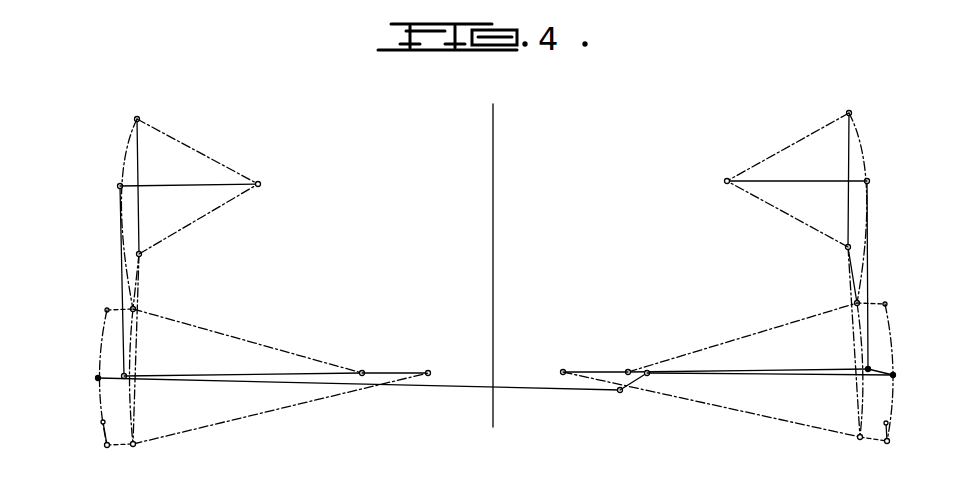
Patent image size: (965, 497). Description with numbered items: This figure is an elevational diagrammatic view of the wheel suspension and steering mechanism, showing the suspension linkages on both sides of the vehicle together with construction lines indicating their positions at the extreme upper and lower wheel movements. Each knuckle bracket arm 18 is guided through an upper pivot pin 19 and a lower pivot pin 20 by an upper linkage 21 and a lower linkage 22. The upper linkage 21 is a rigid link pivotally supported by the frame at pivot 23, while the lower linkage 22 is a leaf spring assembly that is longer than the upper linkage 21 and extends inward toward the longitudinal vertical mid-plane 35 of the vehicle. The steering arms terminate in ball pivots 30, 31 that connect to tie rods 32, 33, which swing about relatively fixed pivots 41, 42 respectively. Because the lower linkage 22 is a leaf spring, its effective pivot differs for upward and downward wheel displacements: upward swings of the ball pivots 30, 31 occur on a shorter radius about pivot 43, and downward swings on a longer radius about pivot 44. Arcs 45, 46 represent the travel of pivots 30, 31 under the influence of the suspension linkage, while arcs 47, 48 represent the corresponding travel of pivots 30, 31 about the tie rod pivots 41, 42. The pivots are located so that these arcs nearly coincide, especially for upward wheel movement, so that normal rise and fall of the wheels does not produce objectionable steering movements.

The knuckle bracket arm 18 is at (120, 257).
The upper pivot pin 19 is at (118, 186).
The lower pivot pin 20 is at (126, 376).
The upper linkage 21 is at (160, 186).
The lower linkage 22 is at (258, 378).
The frame pivot of upper linkage 23 is at (260, 184).
The ball pivot 30 is at (895, 376).
The ball pivot 31 is at (98, 378).
The tie rod 32 is at (757, 378).
The tie rod 33 is at (493, 388).
The longitudinal vertical mid-plane 35 is at (493, 144).
The fixed tie rod pivot 41 is at (647, 376).
The fixed tie rod pivot 42 is at (620, 393).
The effective upper-swing pivot 43 is at (362, 372).
The effective lower-swing pivot 44 is at (428, 372).
The arc of travel of pivot 30 45 is at (890, 441).
The arc of travel of pivot 31 46 is at (101, 423).
The tie rod arc of pivot 30 47 is at (889, 423).
The tie rod arc of pivot 31 48 is at (105, 445).